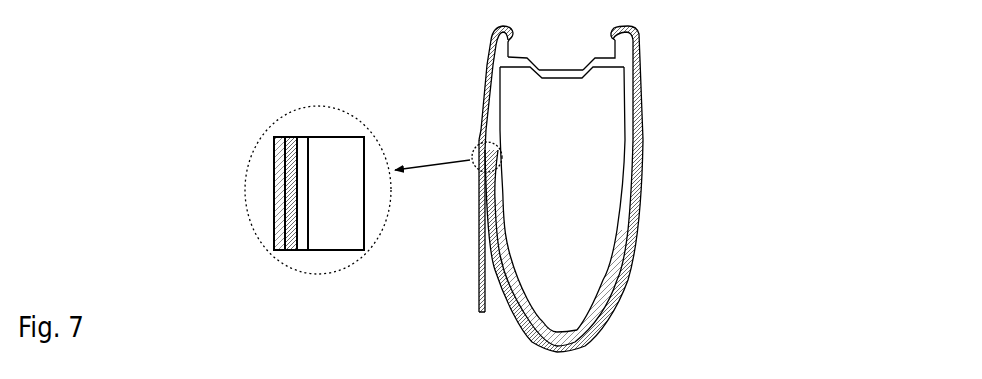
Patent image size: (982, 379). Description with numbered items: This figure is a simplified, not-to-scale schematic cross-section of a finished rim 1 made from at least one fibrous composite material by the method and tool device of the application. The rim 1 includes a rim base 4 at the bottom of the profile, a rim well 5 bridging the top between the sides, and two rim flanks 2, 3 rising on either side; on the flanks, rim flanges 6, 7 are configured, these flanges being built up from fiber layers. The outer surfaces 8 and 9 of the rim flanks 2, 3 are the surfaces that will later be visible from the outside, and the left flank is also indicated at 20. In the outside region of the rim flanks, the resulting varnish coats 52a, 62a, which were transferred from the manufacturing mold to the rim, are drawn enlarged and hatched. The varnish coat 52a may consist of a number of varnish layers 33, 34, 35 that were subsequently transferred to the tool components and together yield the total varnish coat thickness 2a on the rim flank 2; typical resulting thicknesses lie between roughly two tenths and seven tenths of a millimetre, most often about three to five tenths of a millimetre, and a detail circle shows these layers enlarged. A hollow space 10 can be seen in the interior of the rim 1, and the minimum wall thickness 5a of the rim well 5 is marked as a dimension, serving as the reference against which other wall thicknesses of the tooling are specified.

The rim 1 is at (416, 61).
The rim flank 2 is at (500, 134).
The total varnish coat thickness 2a is at (497, 303).
The rim flank 3 is at (624, 143).
The rim base 4 is at (558, 317).
The rim well 5 is at (562, 83).
The minimum wall thickness 5a is at (553, 90).
The rim flange 6 is at (486, 34).
The rim flange 7 is at (640, 33).
The outer surface 8 is at (492, 50).
The outer surface 9 is at (634, 50).
The hollow space 10 is at (588, 203).
The outer surface of first side wall 20 is at (477, 90).
The varnish layer 33 is at (305, 206).
The varnish layer 34 is at (290, 190).
The varnish layer 35 is at (278, 165).
The varnish coat 52a is at (478, 133).
The varnish coat 62a is at (640, 142).